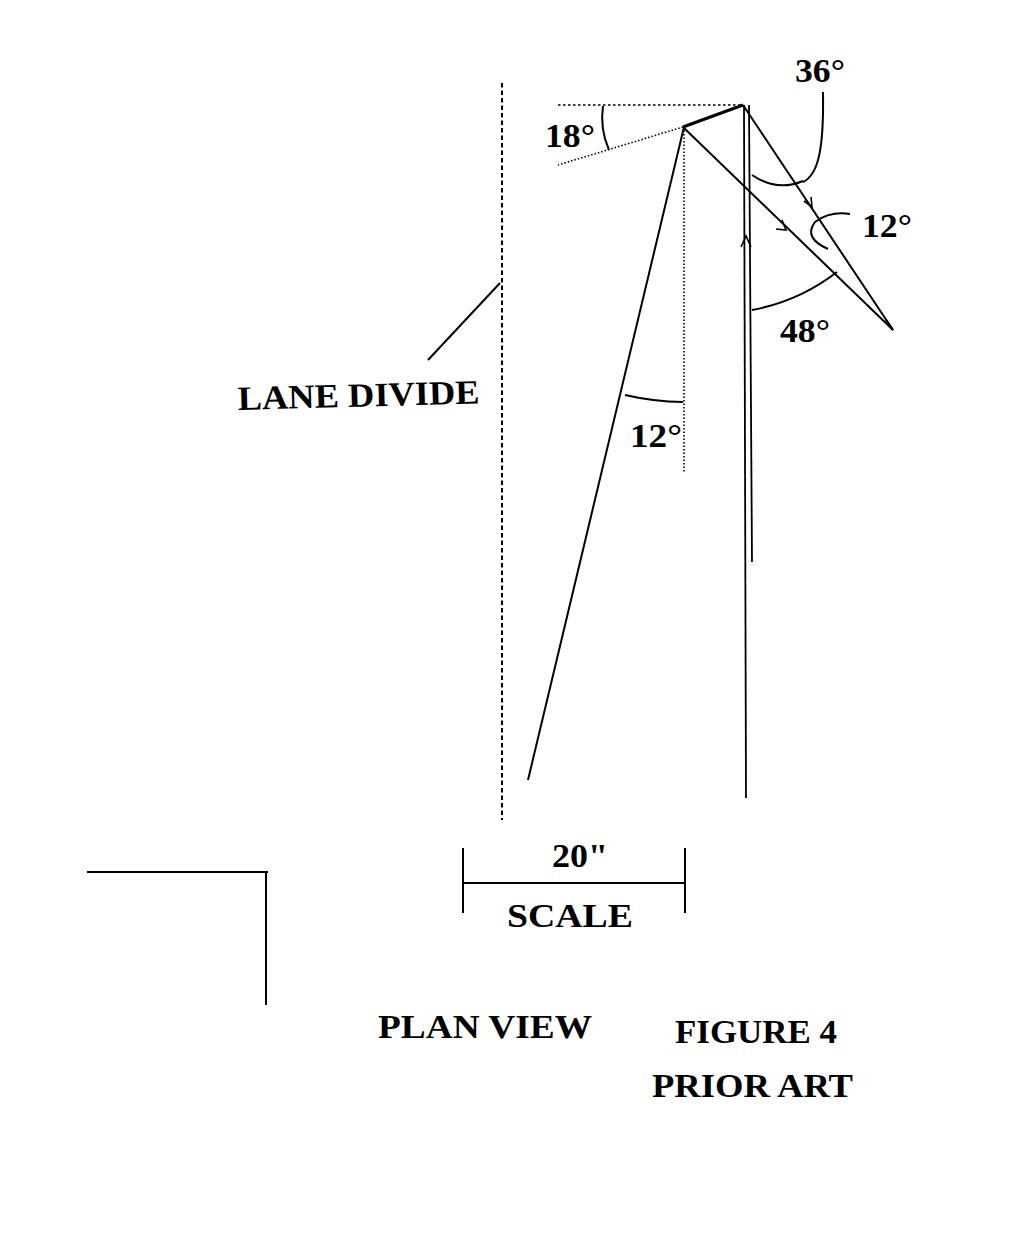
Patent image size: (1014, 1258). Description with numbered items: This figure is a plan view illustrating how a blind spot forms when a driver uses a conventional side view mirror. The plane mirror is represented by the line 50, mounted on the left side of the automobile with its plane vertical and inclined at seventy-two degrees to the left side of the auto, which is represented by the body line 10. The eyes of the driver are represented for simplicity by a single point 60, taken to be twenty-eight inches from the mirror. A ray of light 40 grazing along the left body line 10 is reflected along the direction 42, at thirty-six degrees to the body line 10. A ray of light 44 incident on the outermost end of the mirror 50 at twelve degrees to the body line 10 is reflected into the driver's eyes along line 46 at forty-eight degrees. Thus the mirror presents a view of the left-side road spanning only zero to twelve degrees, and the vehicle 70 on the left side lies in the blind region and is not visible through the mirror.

The left side body line of the auto 10 is at (752, 417).
The ray of light grazing along the left body line 40 is at (745, 433).
The reflected direction of grazing ray 42 is at (850, 263).
The ray of light incident at outermost end 44 is at (637, 330).
The reflected line into the driver's eyes 46 is at (858, 298).
The plane mirror 50 is at (705, 117).
The eyes of the driver 60 is at (903, 337).
The vehicle in blind region 70 is at (247, 872).